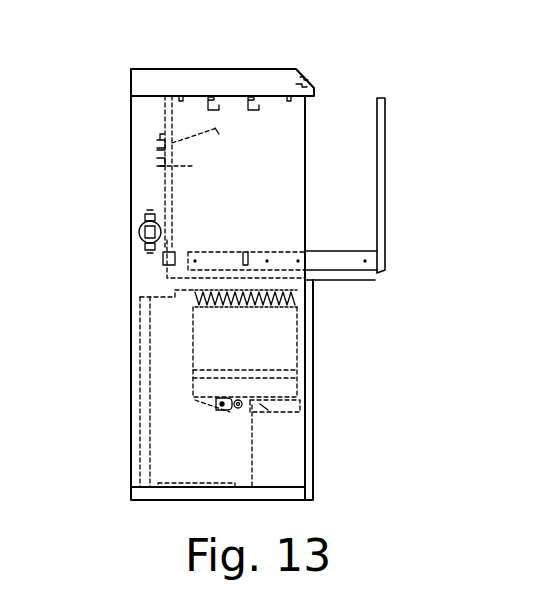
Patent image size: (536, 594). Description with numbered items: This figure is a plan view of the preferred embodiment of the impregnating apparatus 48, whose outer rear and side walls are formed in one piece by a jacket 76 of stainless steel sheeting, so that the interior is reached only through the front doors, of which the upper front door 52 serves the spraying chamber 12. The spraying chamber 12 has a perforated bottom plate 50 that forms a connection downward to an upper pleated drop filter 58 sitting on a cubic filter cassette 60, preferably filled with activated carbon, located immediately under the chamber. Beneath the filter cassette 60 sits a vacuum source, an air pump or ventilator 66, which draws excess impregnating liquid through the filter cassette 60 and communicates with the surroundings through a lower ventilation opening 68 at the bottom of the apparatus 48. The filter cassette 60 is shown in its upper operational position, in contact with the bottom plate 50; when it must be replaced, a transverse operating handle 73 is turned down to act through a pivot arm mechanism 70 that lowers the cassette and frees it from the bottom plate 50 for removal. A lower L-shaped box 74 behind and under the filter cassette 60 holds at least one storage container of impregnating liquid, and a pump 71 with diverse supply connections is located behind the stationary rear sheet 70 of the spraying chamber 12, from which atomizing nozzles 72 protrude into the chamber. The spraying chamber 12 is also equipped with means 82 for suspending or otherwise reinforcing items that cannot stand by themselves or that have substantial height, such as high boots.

The spraying chamber 12 is at (229, 244).
The apparatus 48 is at (312, 72).
The bottom plate 50 is at (330, 270).
The upper front door 52 is at (380, 167).
The upper pleated drop filter 58 is at (300, 302).
The filter cassette 60 is at (229, 359).
The ventilator 66 is at (288, 393).
The lower ventilation opening 68 is at (170, 487).
The pivot arm mechanism 70 is at (172, 181).
The pump 71 is at (136, 232).
The atomizing nozzles 72 is at (195, 166).
The transverse operating handle 73 is at (303, 407).
The lower L-shaped box 74 is at (166, 459).
The jacket 76 is at (128, 277).
The suspending means 82 is at (213, 98).